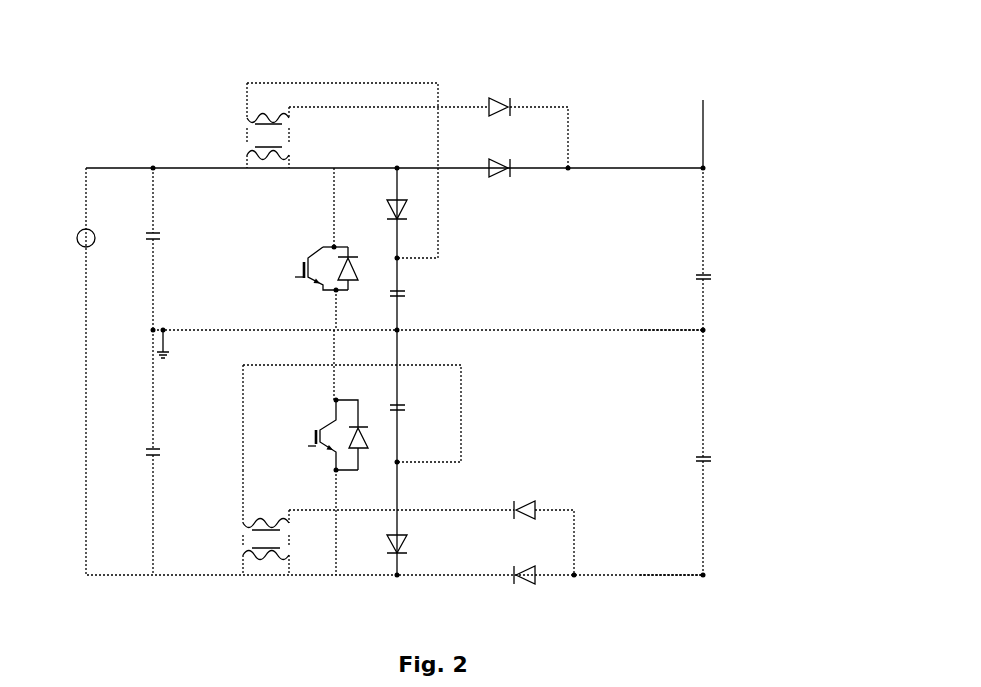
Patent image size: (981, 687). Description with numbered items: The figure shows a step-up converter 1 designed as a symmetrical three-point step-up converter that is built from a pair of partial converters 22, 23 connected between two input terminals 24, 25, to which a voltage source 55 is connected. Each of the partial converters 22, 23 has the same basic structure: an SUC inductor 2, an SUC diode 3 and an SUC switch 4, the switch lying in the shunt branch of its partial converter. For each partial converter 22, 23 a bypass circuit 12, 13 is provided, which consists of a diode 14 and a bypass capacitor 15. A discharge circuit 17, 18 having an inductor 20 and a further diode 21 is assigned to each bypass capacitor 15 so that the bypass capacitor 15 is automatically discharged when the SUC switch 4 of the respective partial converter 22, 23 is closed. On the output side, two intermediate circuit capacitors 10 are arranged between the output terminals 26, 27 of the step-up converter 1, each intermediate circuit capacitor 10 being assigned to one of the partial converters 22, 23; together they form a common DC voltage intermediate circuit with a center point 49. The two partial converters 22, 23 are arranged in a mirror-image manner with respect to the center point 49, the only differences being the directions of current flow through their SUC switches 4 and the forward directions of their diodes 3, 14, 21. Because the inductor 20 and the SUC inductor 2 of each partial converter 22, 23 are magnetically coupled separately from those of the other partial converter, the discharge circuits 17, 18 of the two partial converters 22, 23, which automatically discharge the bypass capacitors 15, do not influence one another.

The step-up converter 1 is at (93, 83).
The SUC inductor 2 is at (263, 157).
The SUC diode 3 is at (502, 173).
The SUC switch 4 is at (296, 275).
The intermediate circuit capacitor 10 is at (711, 275).
The bypass circuit 12 is at (442, 323).
The DC link node 13 is at (402, 277).
The diode 14 is at (392, 205).
The bypass capacitor 15 is at (401, 297).
The discharge circuit 17 is at (389, 323).
The discharge path 18 is at (369, 83).
The inductor 20 is at (265, 118).
The further diode 21 is at (491, 100).
The partial converter 22 is at (555, 98).
The partial converter 23 is at (566, 582).
The input terminal 24 is at (153, 168).
The input terminal 25 is at (153, 575).
The output terminal 26 is at (703, 130).
The output terminal 27 is at (703, 575).
The center point 49 is at (703, 332).
The voltage source 55 is at (80, 248).